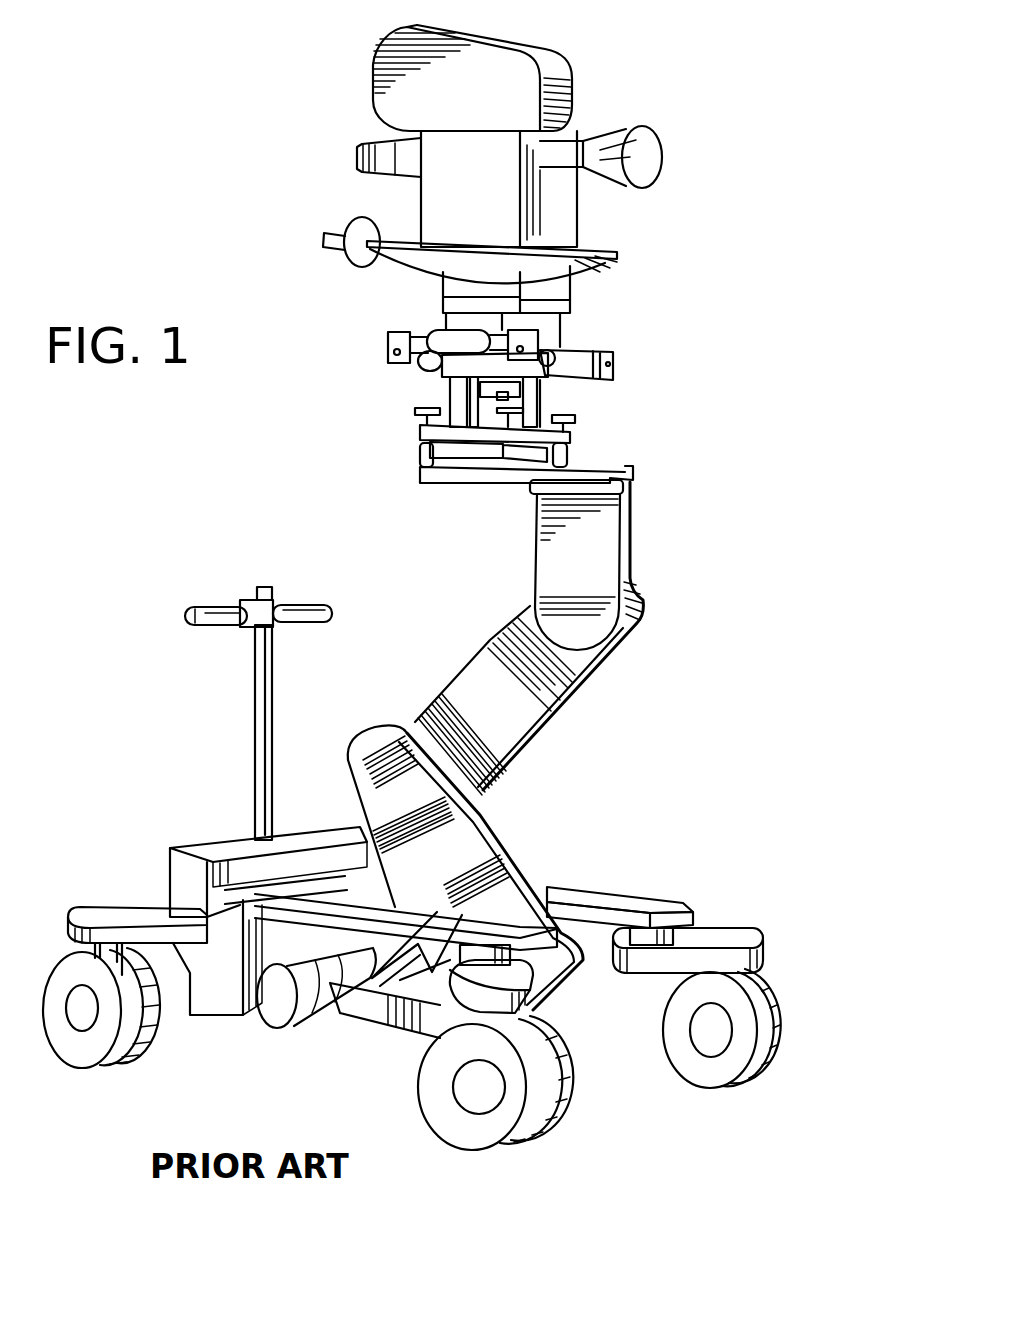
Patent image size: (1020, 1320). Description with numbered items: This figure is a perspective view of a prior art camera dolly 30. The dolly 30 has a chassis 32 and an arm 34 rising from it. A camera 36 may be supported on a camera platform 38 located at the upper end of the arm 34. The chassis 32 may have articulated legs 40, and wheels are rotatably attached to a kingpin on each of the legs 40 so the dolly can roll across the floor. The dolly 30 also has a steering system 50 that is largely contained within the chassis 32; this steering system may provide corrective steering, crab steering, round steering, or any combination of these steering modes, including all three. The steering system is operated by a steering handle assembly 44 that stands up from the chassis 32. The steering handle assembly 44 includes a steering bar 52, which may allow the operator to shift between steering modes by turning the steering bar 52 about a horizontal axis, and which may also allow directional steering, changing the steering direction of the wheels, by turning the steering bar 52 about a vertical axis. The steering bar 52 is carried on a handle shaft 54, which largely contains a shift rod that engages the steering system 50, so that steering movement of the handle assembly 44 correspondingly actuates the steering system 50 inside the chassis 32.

The camera dolly 30 is at (571, 826).
The chassis 32 is at (610, 892).
The arm 34 is at (480, 698).
The camera 36 is at (560, 224).
The camera platform 38 is at (417, 469).
The articulated legs 40 is at (733, 930).
The steering handle assembly 44 is at (253, 745).
The steering system 50 is at (345, 876).
The steering bar 52 is at (217, 608).
The handle shaft 54 is at (268, 693).